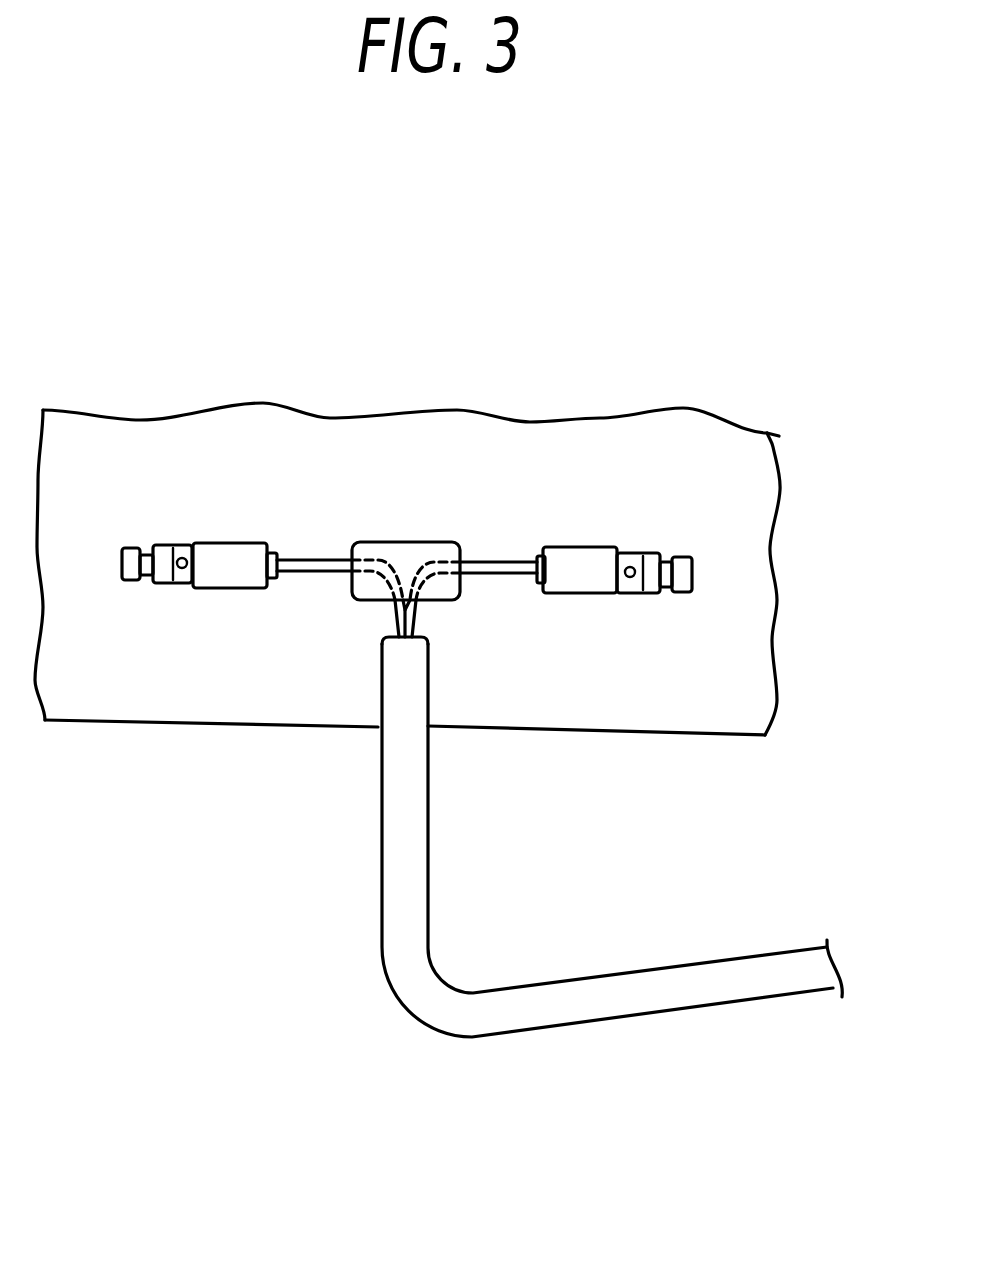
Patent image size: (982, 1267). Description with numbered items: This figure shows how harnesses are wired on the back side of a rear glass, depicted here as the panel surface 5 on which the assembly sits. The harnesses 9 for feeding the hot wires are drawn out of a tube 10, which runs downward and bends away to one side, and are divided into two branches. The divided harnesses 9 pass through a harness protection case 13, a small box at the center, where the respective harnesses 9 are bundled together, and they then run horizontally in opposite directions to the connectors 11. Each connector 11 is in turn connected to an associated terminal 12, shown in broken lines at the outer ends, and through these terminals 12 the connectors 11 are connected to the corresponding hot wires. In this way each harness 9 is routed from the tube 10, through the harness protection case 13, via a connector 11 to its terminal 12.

The vehicle body panel (mounting surface) 5 is at (723, 490).
The harness 9 is at (317, 558).
The tube 10 is at (425, 851).
The connector 11 is at (230, 546).
The terminal 12 is at (180, 545).
The harness protection case 13 is at (407, 553).